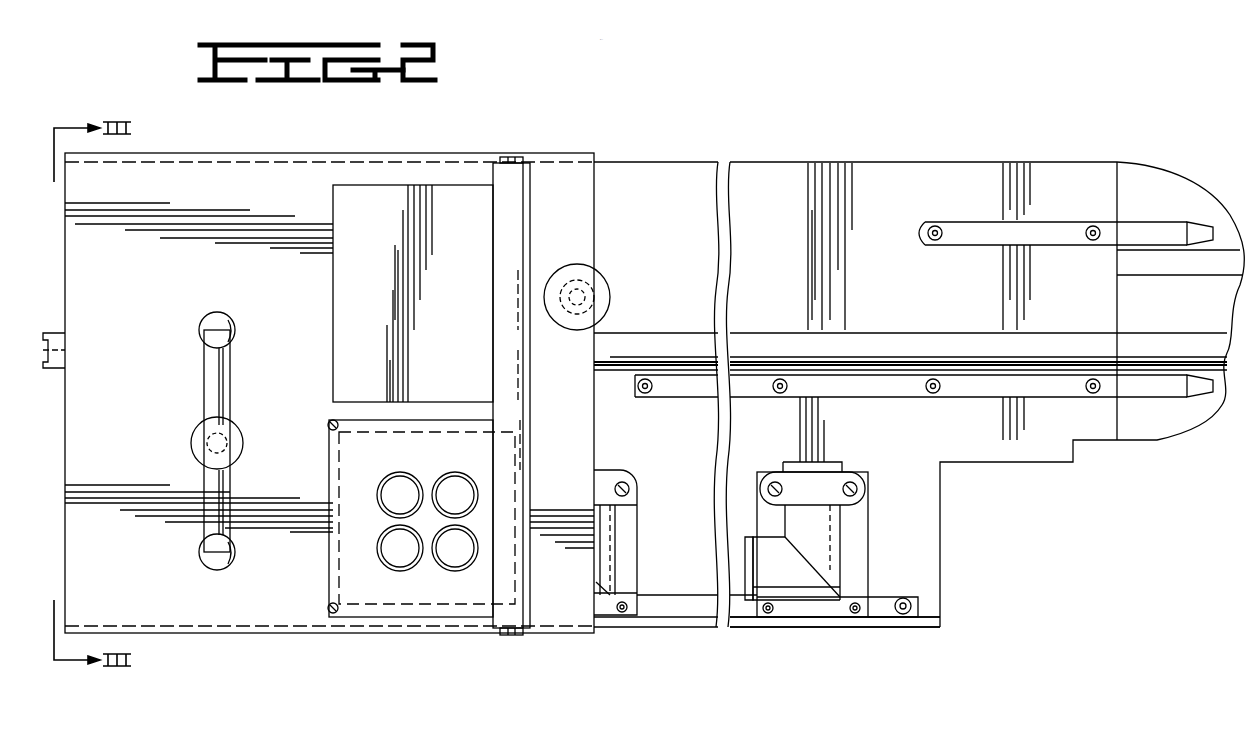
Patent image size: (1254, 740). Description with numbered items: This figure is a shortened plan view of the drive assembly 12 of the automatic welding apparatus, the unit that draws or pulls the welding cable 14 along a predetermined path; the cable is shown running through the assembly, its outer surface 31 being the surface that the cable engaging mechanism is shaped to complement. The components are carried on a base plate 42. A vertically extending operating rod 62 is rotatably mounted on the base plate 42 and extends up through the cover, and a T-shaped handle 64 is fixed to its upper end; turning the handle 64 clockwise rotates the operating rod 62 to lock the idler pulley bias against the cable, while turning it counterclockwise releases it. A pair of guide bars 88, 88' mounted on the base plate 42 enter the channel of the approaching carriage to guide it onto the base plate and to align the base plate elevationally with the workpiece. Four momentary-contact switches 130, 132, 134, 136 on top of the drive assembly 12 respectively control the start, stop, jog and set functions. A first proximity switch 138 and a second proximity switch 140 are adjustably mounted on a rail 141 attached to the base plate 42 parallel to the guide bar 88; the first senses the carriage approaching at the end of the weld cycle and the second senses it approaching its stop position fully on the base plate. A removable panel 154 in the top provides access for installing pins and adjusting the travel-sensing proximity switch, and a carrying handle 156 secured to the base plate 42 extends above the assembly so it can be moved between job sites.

The drive assembly 12 is at (548, 660).
The welding cable 14 is at (893, 340).
The outer surface of the welding cable 31 is at (660, 333).
The base plate 42 is at (695, 469).
The operating rod 62 is at (205, 448).
The T-shaped handle 64 is at (222, 385).
The guide bar 88 is at (924, 408).
The guide bar 88' is at (1066, 211).
The momentary-contact switch 130 is at (460, 483).
The momentary-contact switch 132 is at (395, 483).
The momentary-contact switch 134 is at (453, 560).
The momentary-contact switch 136 is at (393, 560).
The first proximity switch 138 is at (820, 528).
The second proximity switch 140 is at (605, 535).
The rail 141 is at (735, 612).
The removable panel 154 is at (478, 313).
The carrying handle 156 is at (512, 212).